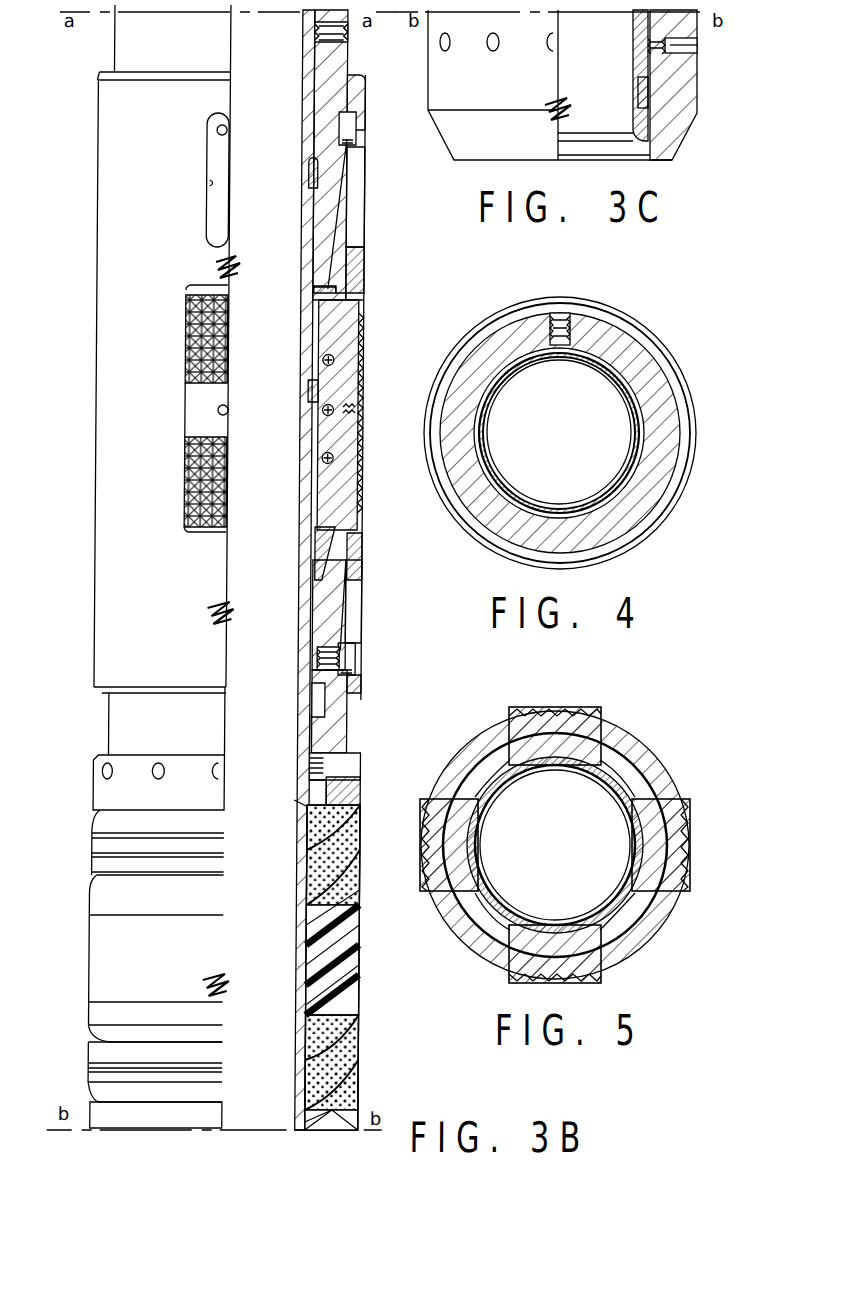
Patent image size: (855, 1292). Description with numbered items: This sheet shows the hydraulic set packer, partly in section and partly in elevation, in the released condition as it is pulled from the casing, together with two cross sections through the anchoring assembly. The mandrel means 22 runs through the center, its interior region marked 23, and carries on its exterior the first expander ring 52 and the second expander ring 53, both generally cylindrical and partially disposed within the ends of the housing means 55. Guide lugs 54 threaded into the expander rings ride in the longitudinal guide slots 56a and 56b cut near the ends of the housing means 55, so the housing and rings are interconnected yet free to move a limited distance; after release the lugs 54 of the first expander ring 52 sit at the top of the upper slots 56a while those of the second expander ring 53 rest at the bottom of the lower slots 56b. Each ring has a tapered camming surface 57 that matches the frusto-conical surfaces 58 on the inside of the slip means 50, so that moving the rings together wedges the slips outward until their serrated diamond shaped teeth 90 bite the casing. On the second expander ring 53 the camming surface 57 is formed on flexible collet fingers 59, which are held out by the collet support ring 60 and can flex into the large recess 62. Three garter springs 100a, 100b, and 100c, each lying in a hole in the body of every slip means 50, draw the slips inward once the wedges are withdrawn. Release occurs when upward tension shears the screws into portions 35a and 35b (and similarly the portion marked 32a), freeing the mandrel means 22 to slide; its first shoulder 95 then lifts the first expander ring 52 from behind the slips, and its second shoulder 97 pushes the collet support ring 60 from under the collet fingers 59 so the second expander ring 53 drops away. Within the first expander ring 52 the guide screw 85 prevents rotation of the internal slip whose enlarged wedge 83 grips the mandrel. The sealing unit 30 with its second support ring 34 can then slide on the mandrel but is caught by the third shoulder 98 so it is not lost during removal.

In FIG. 3B, the mandrel means 22 is at (303, 1080).
In FIG. 3C, the mandrel means 22 is at (633, 60).
In FIG. 4, the mandrel means 22 is at (640, 444).
In FIG. 5, the mandrel means 22 is at (640, 930).
In FIG. 3B, the bore 23 is at (268, 429).
In FIG. 4, the bore 23 is at (562, 458).
In FIG. 5, the bore 23 is at (562, 863).
In FIG. 3B, the sealing unit 30 is at (84, 777).
In FIG. 3B, the collar 32a is at (318, 770).
In FIG. 3C, the second support ring 34 is at (684, 112).
In FIG. 3C, the sheared portion of shear screw 35a is at (697, 50).
In FIG. 3B, the sheared portion of shear screw 35b is at (305, 820).
In FIG. 3B, the slip means 50 is at (305, 312).
In FIG. 5, the slip means 50 is at (590, 737).
In FIG. 3B, the first expander ring 52 is at (345, 90).
In FIG. 4, the first expander ring 52 is at (630, 355).
In FIG. 3B, the second expander ring 53 is at (342, 708).
In FIG. 3B, the guide lugs 54 is at (352, 120).
In FIG. 3B, the housing means 55 is at (100, 226).
In FIG. 4, the housing means 55 is at (632, 310).
In FIG. 5, the housing means 55 is at (648, 748).
In FIG. 3B, the upper guide slots 56a is at (208, 185).
In FIG. 3B, the lower guide slots 56b is at (356, 615).
In FIG. 3B, the tapered camming surface 57 is at (338, 230).
In FIG. 3B, the frusto-conical surfaces 58 is at (340, 296).
In FIG. 3B, the collet fingers 59 is at (320, 600).
In FIG. 3B, the collet support ring 60 is at (318, 358).
In FIG. 3B, the large recess 62 is at (315, 712).
In FIG. 4, the enlarged wedge 83 is at (645, 400).
In FIG. 4, the guide screw 85 is at (560, 313).
In FIG. 5, the serrated diamond shaped teeth 90 is at (688, 822).
In FIG. 3B, the first shoulder 95 is at (310, 170).
In FIG. 3B, the second shoulder 97 is at (311, 388).
In FIG. 3C, the third shoulder 98 is at (650, 80).
In FIG. 3B, the garter spring 100a is at (336, 358).
In FIG. 3B, the garter spring 100b is at (336, 408).
In FIG. 3B, the garter spring 100c is at (336, 459).
In FIG. 5, the garter spring 100c is at (640, 782).